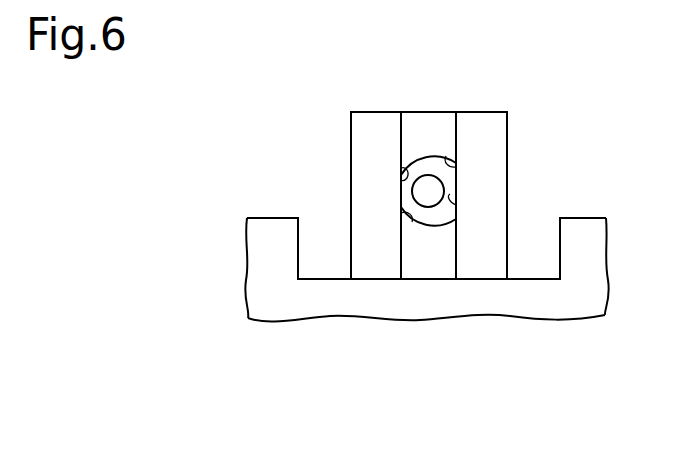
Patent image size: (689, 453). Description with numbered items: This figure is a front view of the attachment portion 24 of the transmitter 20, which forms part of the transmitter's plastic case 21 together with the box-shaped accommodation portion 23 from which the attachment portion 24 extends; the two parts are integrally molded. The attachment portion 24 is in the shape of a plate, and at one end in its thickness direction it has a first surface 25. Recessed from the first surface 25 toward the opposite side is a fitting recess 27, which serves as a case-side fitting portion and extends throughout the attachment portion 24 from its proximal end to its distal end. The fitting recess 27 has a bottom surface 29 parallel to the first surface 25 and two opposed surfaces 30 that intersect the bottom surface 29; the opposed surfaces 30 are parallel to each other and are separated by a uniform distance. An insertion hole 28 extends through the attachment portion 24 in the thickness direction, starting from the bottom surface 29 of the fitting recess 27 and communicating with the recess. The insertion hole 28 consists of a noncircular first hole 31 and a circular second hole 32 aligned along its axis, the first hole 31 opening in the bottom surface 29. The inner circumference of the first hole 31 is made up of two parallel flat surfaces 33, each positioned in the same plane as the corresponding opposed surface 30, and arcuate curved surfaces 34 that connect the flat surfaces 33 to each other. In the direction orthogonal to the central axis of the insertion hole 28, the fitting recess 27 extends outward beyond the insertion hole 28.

The transmitter 20 is at (592, 217).
The case 21 is at (603, 275).
The accommodation portion 23 is at (603, 297).
The attachment portion 24 is at (508, 183).
The first surface 25 is at (497, 135).
The fitting recess 27 is at (448, 124).
The insertion hole 28 is at (482, 366).
The bottom surface 29 is at (427, 125).
The opposed surfaces 30 is at (408, 122).
The first hole 31 is at (443, 218).
The second hole 32 is at (430, 197).
The flat surfaces 33 is at (401, 168).
The curved surfaces 34 is at (456, 167).